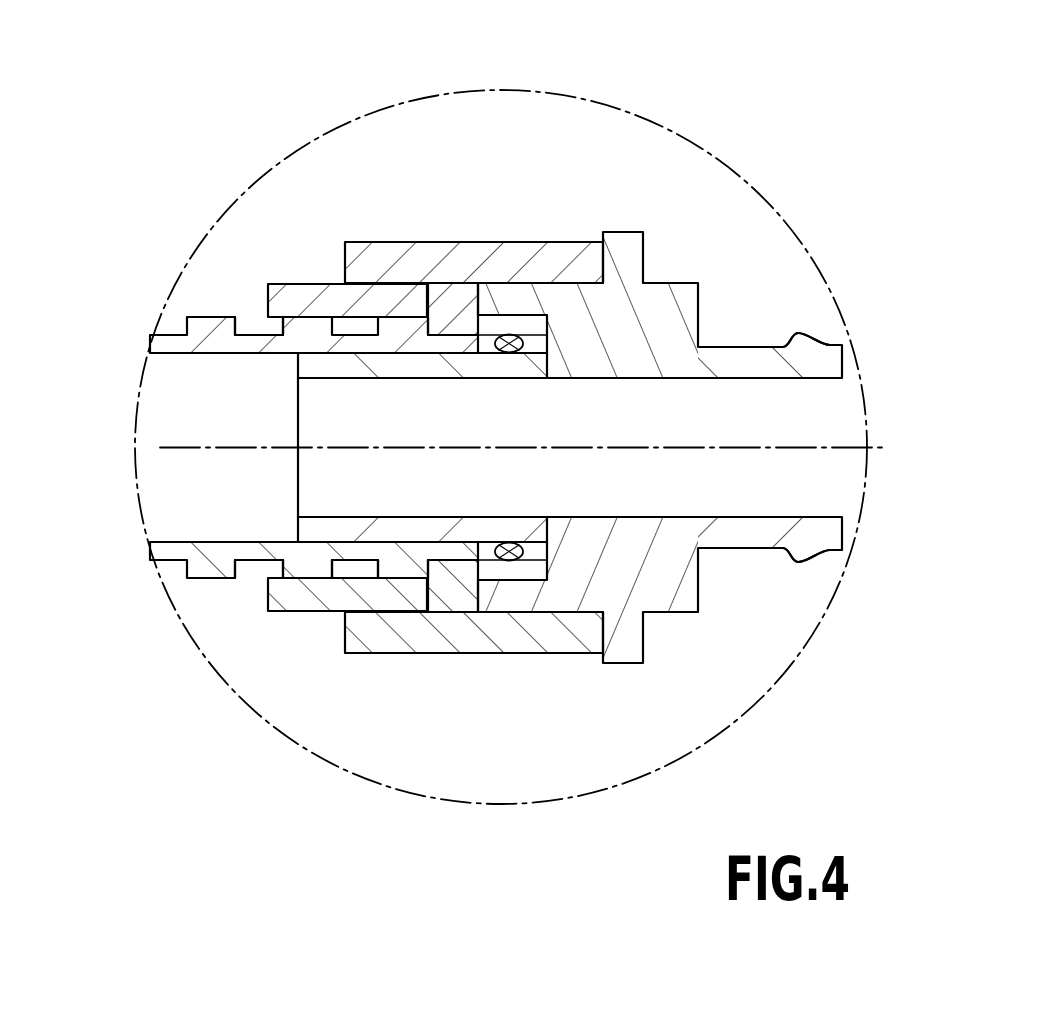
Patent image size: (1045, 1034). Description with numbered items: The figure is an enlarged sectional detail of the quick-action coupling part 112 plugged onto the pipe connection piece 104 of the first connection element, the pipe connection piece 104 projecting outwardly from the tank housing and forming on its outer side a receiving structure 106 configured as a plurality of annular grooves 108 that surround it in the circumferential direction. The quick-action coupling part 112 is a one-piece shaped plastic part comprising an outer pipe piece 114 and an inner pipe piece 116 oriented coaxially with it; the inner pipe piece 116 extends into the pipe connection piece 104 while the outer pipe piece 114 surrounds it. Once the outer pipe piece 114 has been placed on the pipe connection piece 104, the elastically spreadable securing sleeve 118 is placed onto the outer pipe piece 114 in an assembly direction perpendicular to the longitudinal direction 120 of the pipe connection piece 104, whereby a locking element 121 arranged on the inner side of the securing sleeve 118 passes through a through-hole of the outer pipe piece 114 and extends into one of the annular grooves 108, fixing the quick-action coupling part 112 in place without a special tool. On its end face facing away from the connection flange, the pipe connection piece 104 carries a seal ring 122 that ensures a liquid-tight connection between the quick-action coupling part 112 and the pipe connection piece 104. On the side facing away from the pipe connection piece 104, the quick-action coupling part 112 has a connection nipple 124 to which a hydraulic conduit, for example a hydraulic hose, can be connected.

The pipe connection piece 104 is at (172, 342).
The receiving structure 106 is at (253, 313).
The annular grooves 108 is at (353, 563).
The quick-action coupling part 112 is at (716, 279).
The outer pipe piece 114 is at (297, 294).
The inner pipe piece 116 is at (312, 367).
The securing sleeve 118 is at (553, 236).
The longitudinal direction 120 is at (866, 459).
The locking element 121 is at (460, 322).
The seal ring 122 is at (513, 348).
The connection nipple 124 is at (803, 560).